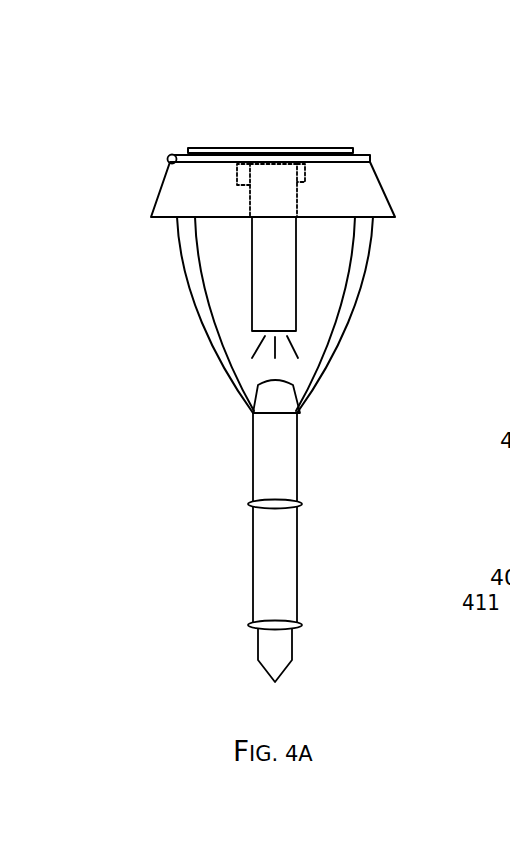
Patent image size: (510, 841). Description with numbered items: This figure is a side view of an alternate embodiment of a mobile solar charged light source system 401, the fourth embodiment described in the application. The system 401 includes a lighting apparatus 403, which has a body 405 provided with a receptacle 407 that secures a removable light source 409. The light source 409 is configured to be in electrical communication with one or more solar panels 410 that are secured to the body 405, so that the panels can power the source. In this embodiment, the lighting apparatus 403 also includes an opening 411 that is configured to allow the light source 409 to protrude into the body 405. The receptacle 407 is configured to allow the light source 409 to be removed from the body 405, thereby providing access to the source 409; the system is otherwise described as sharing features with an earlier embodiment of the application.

The mobile solar charged light source system 401 is at (143, 70).
The lighting apparatus 403 is at (397, 358).
The body 405 is at (195, 302).
The receptacle 407 is at (305, 172).
The removable light source 409 is at (296, 275).
The solar panels 410 is at (310, 150).
The opening 411 is at (297, 210).